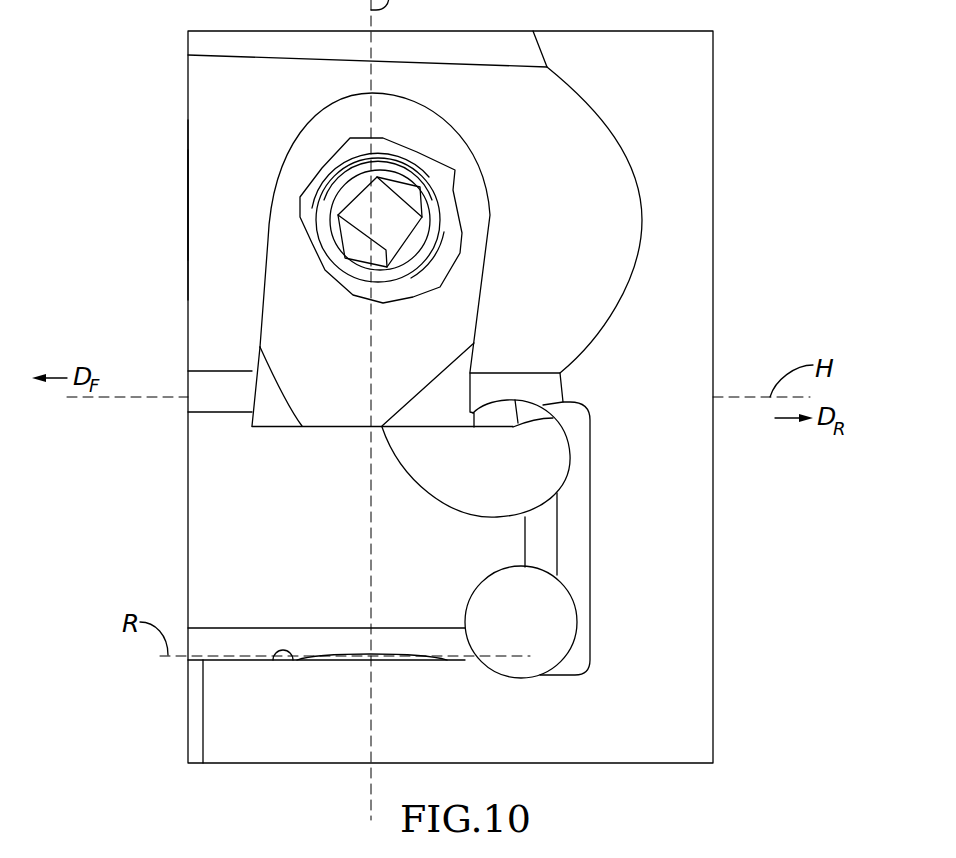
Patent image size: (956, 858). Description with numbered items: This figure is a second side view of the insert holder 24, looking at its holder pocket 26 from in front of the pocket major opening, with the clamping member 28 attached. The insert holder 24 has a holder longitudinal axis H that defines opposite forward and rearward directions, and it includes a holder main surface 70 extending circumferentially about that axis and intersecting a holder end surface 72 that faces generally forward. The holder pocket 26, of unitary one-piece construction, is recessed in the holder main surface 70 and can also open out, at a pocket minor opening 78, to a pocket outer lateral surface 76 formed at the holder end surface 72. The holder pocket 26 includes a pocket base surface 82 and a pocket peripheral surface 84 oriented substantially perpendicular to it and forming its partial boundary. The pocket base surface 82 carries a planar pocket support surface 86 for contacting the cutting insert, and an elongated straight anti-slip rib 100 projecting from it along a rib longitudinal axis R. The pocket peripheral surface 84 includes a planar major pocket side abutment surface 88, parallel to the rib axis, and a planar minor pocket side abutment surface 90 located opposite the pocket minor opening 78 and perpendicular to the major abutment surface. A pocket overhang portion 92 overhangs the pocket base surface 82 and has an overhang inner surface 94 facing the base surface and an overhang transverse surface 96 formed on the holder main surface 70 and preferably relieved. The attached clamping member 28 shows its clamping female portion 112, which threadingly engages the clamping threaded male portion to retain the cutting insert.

The insert holder 24 is at (742, 97).
The holder pocket 26 is at (232, 455).
The clamping member 28 is at (445, 327).
The holder main surface 70 is at (445, 732).
The holder end surface 72 is at (188, 220).
The pocket outer lateral surface 76 is at (188, 220).
The pocket minor opening 78 is at (312, 600).
The pocket base surface 82 is at (252, 658).
The pocket peripheral surface 84 is at (225, 500).
The pocket support surface 86 is at (272, 652).
The major pocket side abutment surface 88 is at (303, 512).
The minor pocket side abutment surface 90 is at (523, 540).
The pocket overhang portion 92 is at (223, 247).
The overhang inner surface 94 is at (230, 413).
The overhang transverse surface 96 is at (252, 169).
The anti-slip rib 100 is at (385, 645).
The clamping female portion 112 is at (348, 378).